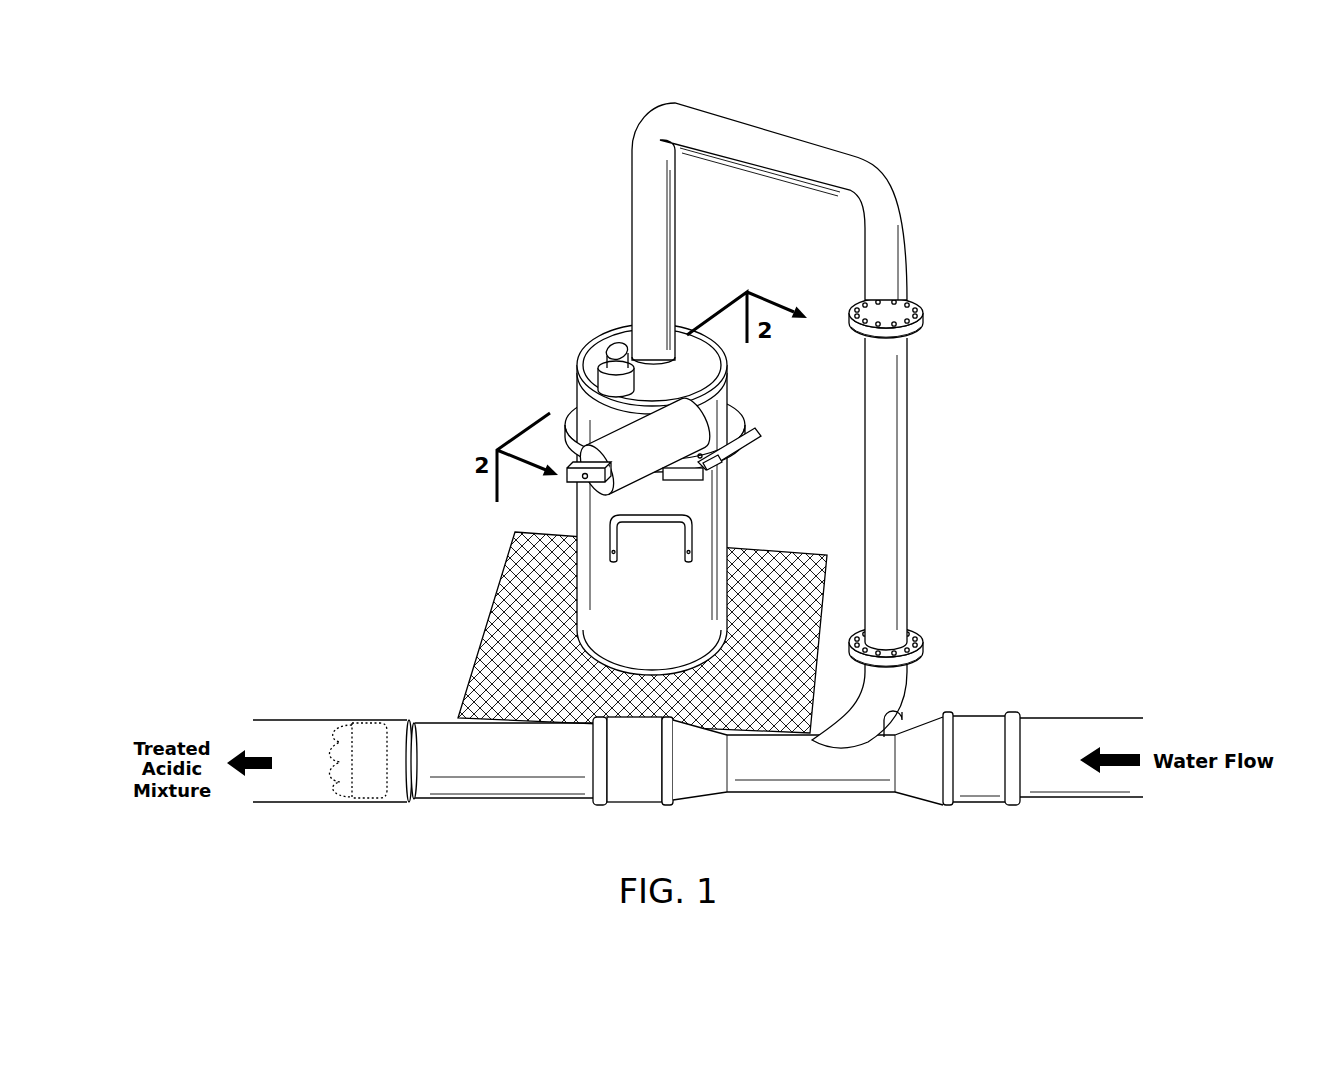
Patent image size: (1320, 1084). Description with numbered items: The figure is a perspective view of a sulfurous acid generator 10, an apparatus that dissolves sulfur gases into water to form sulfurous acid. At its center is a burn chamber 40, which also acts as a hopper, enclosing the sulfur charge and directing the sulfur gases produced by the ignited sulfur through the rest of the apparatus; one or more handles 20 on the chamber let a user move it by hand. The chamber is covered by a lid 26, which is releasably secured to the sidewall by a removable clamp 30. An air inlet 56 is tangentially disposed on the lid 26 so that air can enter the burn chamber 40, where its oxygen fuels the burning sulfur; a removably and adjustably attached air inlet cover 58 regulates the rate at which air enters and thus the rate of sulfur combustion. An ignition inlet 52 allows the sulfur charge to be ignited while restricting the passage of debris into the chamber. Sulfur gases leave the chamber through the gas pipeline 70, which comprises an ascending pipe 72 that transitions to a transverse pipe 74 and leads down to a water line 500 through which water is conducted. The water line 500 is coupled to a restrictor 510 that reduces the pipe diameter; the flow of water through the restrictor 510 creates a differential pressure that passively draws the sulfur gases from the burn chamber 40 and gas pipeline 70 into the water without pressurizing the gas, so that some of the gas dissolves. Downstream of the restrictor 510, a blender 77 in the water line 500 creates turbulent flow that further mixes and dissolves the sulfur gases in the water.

The sulfurous acid generator 10 is at (462, 204).
The handle 20 is at (562, 506).
The lid 26 is at (717, 395).
The clamp 30 is at (740, 457).
The burn chamber 40 is at (612, 512).
The ignition inlet 52 is at (603, 360).
The air inlet 56 is at (592, 450).
The air inlet cover 58 is at (612, 440).
The gas pipeline 70 is at (731, 233).
The ascending pipe 72 is at (660, 225).
The transverse pipe 74 is at (850, 158).
The blender 77 is at (367, 737).
The water line 500 is at (302, 720).
The restrictor 510 is at (837, 787).